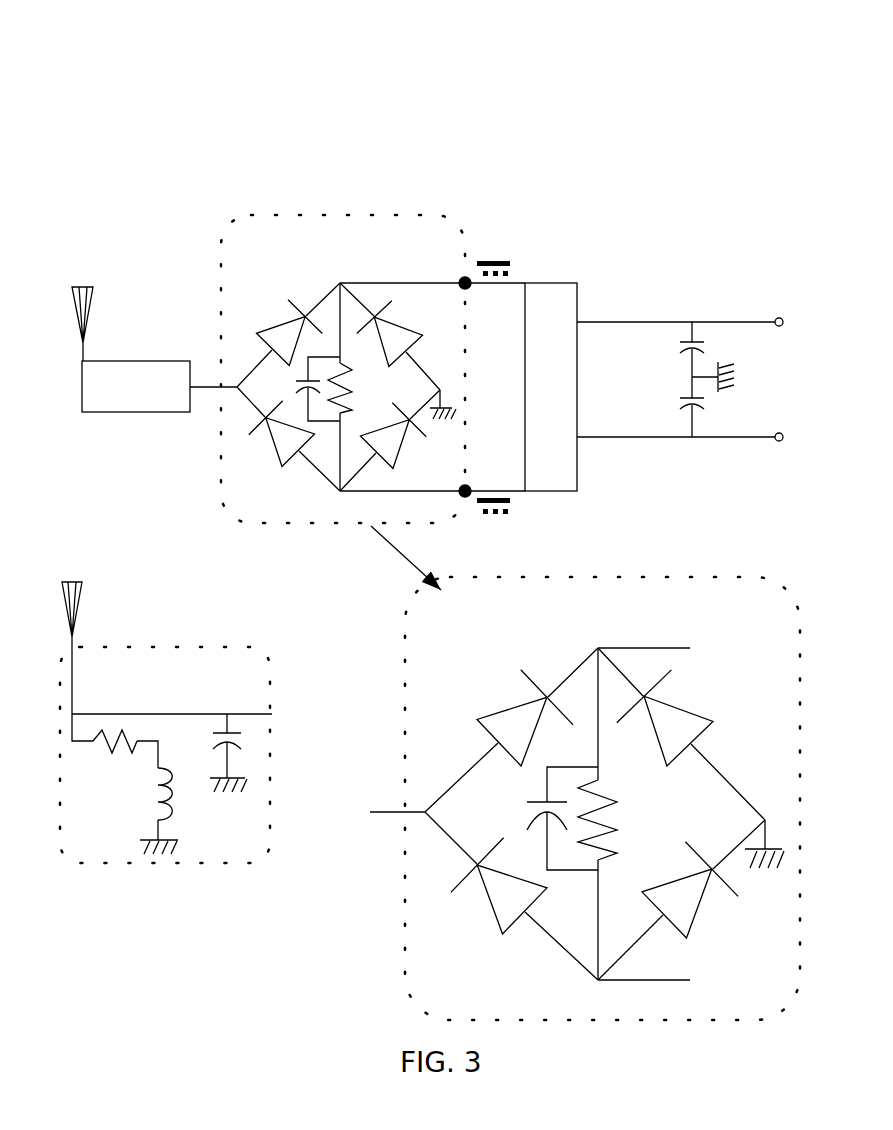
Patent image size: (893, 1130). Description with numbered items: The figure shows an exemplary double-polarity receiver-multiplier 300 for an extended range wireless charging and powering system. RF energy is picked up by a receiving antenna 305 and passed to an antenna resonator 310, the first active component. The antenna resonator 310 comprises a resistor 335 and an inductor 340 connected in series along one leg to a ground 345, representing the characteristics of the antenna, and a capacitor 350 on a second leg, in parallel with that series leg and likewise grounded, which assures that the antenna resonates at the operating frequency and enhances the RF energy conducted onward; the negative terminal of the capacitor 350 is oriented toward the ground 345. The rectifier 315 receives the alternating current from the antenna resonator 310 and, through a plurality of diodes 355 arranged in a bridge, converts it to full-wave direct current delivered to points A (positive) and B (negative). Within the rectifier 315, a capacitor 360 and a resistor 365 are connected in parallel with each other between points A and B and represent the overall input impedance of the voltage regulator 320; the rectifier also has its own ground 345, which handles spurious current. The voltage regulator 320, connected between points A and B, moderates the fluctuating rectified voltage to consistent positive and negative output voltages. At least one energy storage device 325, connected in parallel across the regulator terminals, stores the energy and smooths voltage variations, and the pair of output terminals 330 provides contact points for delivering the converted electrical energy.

The double-polarity receiver-multiplier 300 is at (107, 72).
The receiving antenna 305 is at (82, 276).
The antenna resonator 310 is at (166, 612).
The rectifier 315 is at (510, 617).
The voltage regulator 320 is at (551, 387).
The energy storage device 325 is at (665, 379).
The output terminals 330 is at (700, 358).
The resistor 335 is at (102, 765).
The inductor 340 is at (155, 795).
The ground contacts 345 is at (235, 812).
The capacitor 350 is at (253, 742).
The diodes 355 is at (495, 708).
The capacitor 360 is at (512, 802).
The resistor 365 is at (623, 815).